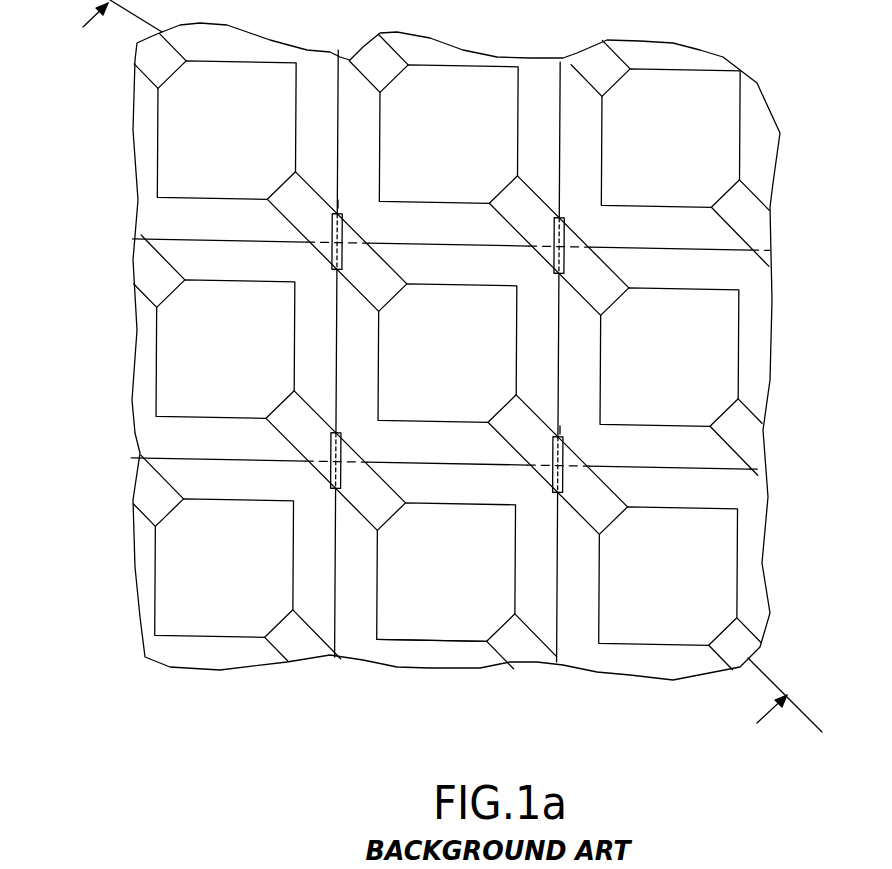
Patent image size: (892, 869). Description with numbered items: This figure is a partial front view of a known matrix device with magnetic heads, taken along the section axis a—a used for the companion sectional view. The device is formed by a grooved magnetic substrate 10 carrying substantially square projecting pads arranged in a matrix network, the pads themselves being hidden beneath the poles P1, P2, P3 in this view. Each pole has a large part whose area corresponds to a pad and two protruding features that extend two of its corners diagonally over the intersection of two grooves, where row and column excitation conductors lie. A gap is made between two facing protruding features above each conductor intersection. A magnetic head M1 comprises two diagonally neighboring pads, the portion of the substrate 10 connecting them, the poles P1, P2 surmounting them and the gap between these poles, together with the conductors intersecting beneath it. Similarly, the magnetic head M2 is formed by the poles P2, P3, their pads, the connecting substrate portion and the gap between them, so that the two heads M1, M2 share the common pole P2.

The grooved magnetic substrate 10 is at (753, 278).
The magnetic head M1 is at (337, 211).
The magnetic head M2 is at (565, 434).
The pole P1 is at (225, 348).
The pole P2 is at (447, 352).
The pole P3 is at (669, 356).
The section axis a- a is at (443, 371).